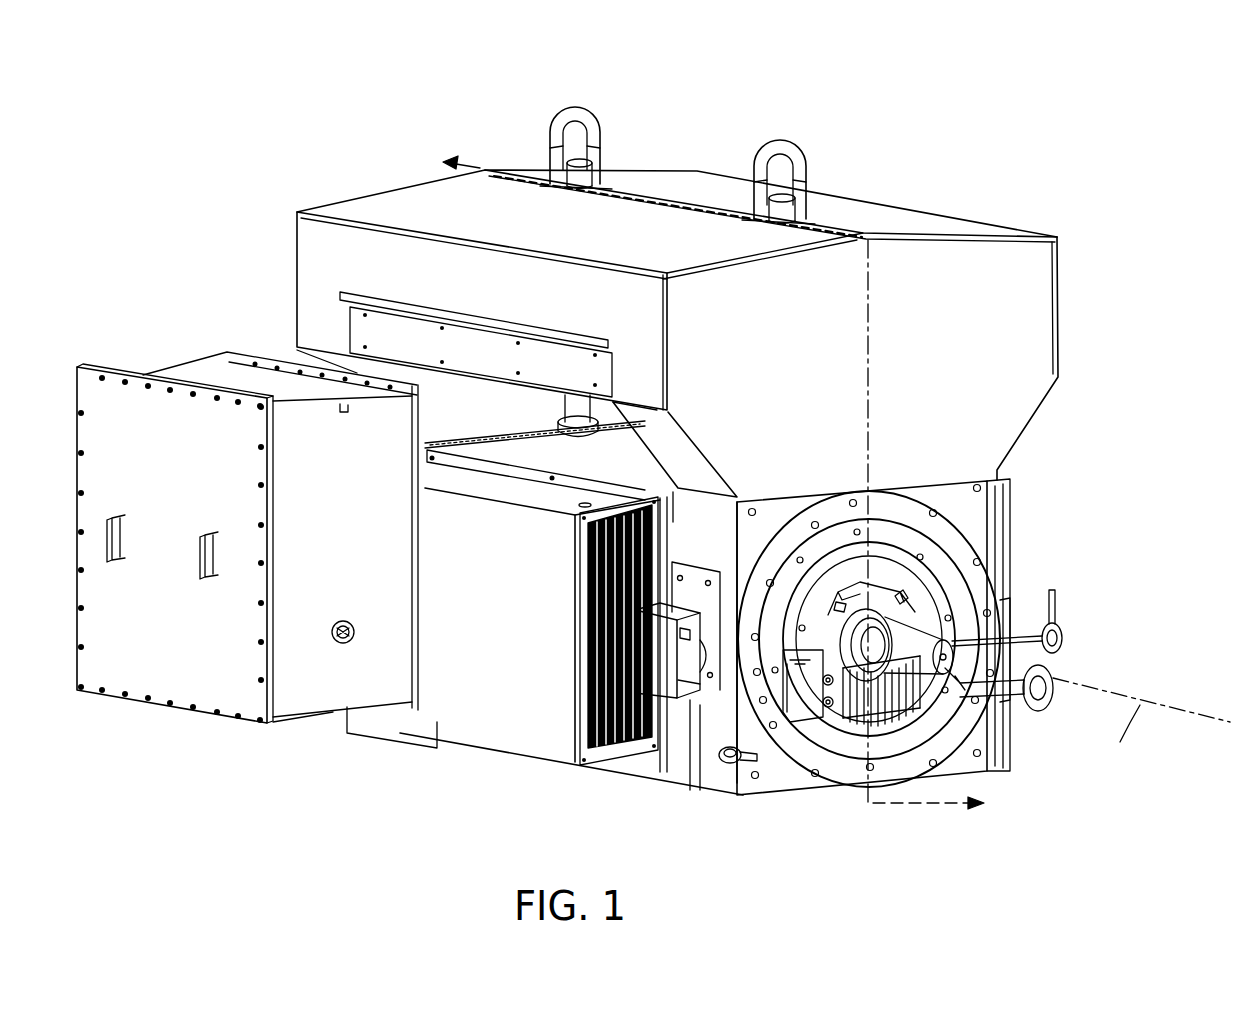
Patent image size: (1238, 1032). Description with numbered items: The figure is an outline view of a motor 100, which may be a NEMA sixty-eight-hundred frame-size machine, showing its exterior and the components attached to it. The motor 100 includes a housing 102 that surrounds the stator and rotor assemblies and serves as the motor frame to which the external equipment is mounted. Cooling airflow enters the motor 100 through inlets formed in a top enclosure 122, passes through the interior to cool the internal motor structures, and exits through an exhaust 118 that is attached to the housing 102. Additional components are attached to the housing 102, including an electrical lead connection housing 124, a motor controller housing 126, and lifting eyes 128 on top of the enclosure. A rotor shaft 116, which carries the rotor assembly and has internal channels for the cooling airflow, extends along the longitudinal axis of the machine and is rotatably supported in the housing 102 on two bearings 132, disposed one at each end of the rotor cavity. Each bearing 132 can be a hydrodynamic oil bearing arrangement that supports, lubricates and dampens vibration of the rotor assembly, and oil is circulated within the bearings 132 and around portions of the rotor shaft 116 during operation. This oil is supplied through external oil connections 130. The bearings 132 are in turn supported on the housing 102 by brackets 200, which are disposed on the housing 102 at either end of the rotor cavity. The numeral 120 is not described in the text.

The motor 100 is at (1072, 164).
The housing 102 is at (975, 502).
The rotor shaft 116 is at (908, 730).
The exhaust 118 is at (613, 743).
The housing enclosure 120 is at (447, 407).
The top enclosure 122 is at (1042, 315).
The electrical lead connection housing 124 is at (660, 660).
The motor controller housing 126 is at (187, 690).
The lifting eyes 128 is at (578, 102).
The oil connections 130 is at (1055, 669).
The bearings 132 is at (820, 727).
The brackets 200 is at (940, 595).